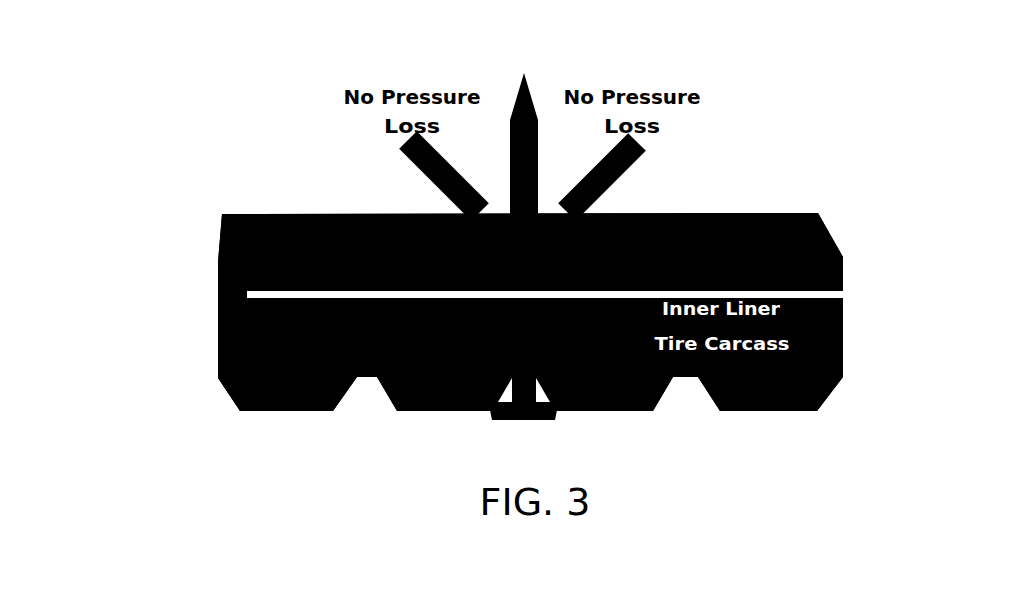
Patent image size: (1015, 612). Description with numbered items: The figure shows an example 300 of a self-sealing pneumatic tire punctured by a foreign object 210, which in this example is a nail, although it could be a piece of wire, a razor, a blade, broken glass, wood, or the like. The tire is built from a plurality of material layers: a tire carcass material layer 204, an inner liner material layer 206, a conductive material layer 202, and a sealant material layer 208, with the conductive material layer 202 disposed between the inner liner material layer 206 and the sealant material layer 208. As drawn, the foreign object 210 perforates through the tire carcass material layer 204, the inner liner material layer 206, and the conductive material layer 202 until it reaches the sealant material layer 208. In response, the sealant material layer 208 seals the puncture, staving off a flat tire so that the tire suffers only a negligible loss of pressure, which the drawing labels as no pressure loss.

The tire with sealant layer punctured by nail 300 is at (857, 72).
The conductive material layer 202 is at (838, 292).
The tire carcass material layer 204 is at (427, 412).
The inner liner material layer 206 is at (225, 270).
The sealant material layer 208 is at (825, 233).
The foreign object 210 is at (527, 78).